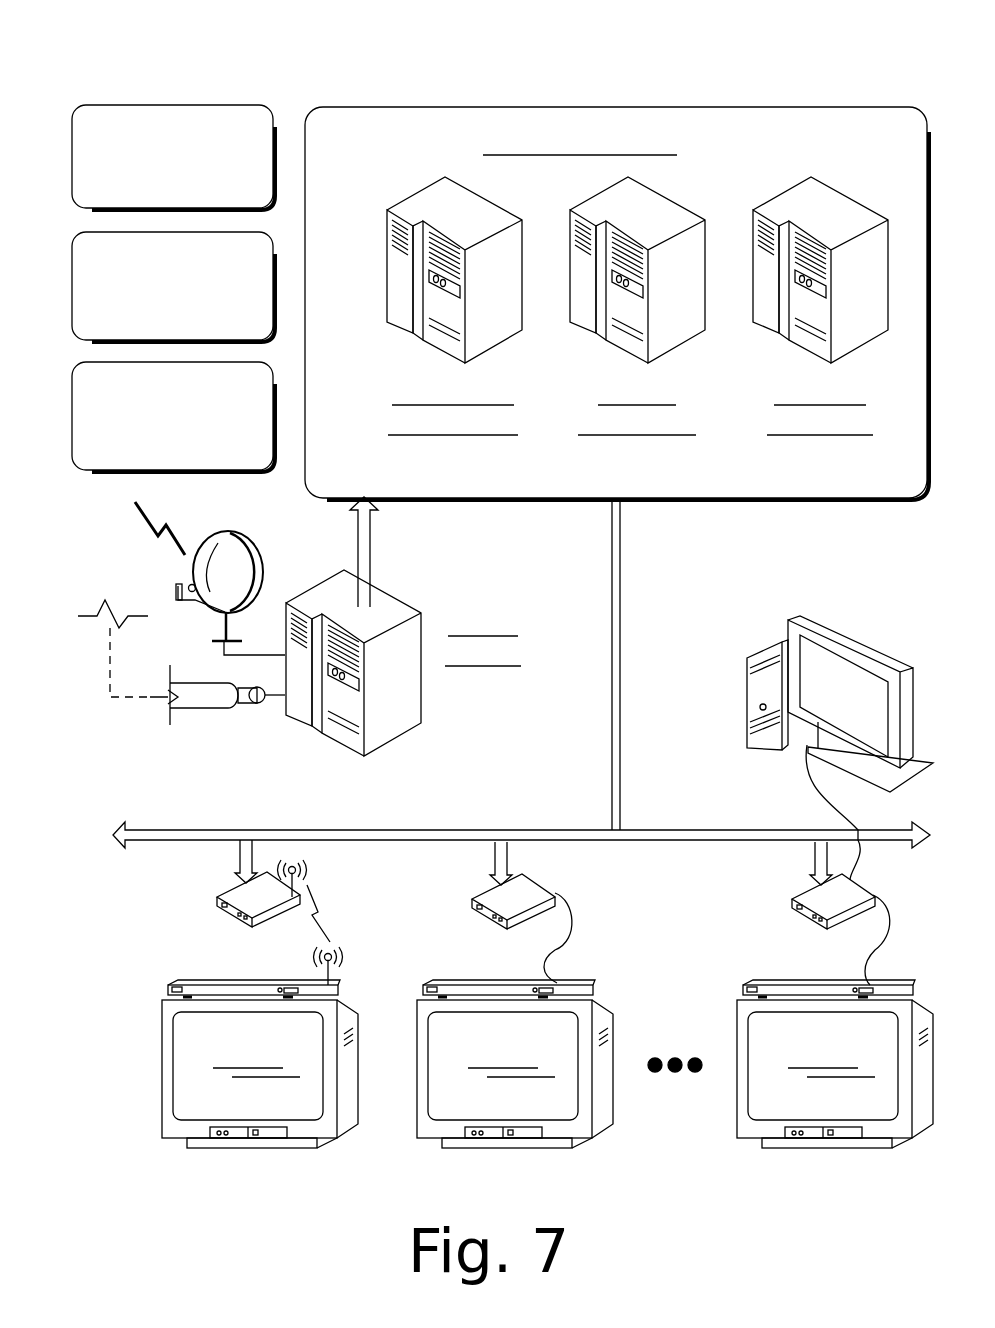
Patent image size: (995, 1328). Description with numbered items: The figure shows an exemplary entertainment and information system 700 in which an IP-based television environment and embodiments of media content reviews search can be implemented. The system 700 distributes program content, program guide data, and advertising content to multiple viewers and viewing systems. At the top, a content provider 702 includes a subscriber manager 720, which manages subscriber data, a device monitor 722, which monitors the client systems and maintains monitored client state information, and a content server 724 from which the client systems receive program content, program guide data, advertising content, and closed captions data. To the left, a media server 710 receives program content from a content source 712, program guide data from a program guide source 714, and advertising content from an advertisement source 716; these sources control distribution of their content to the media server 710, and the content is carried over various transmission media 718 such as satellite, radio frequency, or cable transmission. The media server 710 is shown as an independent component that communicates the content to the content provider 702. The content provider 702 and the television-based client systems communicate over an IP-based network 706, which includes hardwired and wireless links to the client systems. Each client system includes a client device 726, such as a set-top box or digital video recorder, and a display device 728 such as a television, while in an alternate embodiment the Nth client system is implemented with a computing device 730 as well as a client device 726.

The entertainment and information system 700 is at (684, 80).
The content provider 702 is at (749, 155).
The IP-based network 706 is at (422, 830).
The media server 710 is at (461, 695).
The content source 712 is at (150, 189).
The program guide source 714 is at (150, 325).
The advertisement source 716 is at (150, 455).
The transmission media 718 is at (210, 733).
The subscriber manager 720 is at (431, 463).
The device monitor 722 is at (615, 463).
The content server 724 is at (798, 463).
The client device 726 is at (200, 982).
The display device 728 is at (160, 1037).
The computing device 730 is at (762, 647).